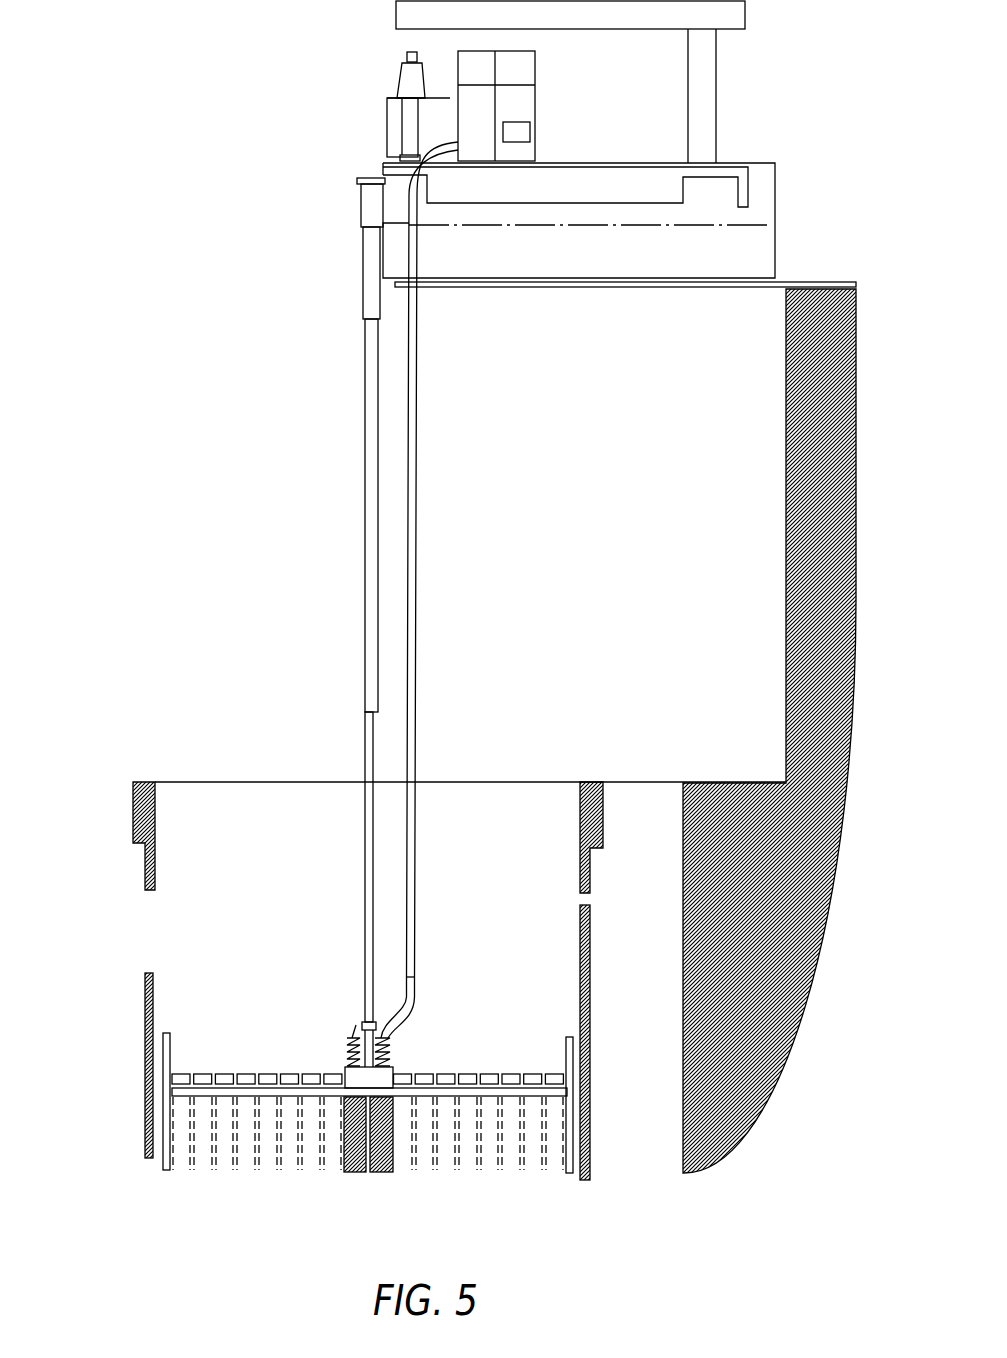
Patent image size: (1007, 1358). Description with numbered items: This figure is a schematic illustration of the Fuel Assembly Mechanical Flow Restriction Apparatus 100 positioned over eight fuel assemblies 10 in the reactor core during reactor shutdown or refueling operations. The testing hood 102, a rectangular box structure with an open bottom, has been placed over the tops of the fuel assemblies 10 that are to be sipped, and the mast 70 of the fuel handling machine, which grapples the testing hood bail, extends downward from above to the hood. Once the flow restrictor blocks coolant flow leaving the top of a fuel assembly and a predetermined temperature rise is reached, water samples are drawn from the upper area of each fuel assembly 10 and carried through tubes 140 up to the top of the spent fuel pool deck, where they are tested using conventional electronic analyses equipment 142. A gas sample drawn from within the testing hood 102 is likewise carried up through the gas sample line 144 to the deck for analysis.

The fuel assemblies 10 is at (404, 1142).
The mast 70 is at (370, 427).
The Fuel Assembly Mechanical Flow Restriction Apparatus 100 is at (313, 1013).
The testing hood 102 is at (362, 1077).
The tubes 140 is at (307, 590).
The electronic analyses equipment 142 is at (468, 143).
The gas sample line 144 is at (407, 690).